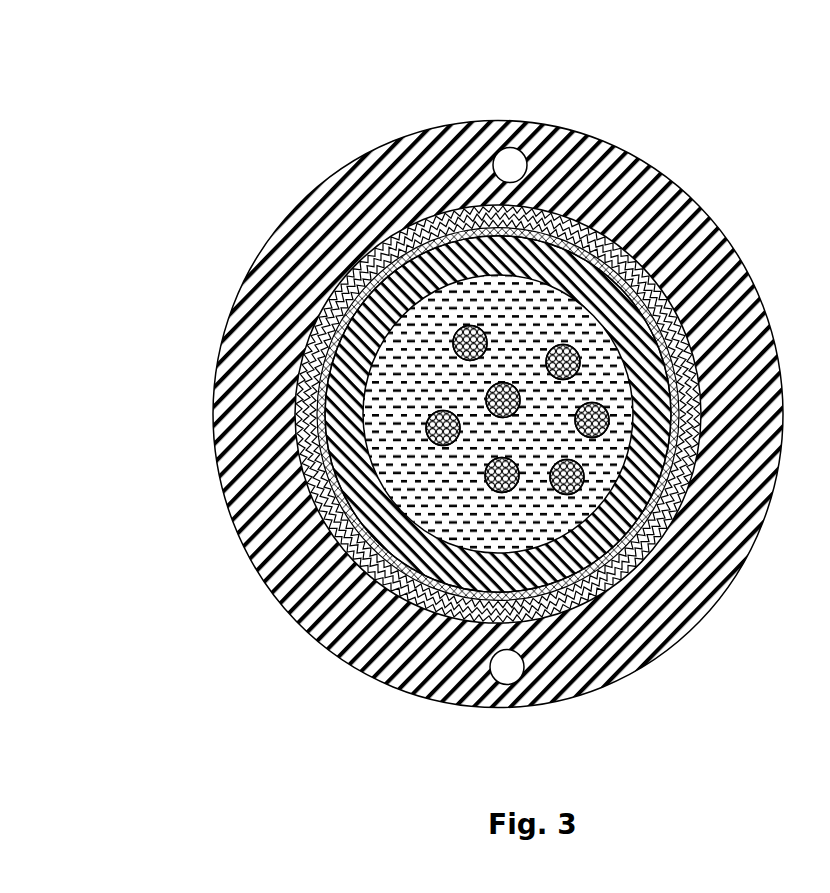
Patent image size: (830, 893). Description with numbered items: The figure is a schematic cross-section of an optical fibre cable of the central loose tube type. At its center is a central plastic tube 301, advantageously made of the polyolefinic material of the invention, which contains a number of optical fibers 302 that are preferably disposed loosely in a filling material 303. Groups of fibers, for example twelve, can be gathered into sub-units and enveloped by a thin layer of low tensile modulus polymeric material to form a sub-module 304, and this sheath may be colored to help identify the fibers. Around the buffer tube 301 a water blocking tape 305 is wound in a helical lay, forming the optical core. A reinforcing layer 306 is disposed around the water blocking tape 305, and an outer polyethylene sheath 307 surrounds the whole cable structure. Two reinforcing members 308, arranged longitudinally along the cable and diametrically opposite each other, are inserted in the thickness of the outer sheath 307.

The central plastic tube 301 is at (347, 440).
The optical fibers 302 is at (430, 436).
The filling material 303 is at (470, 525).
The sub-module 304 is at (453, 337).
The water blocking tape 305 is at (430, 222).
The reinforcing layer 306 is at (317, 323).
The outer polyethylene sheath 307 is at (617, 175).
The reinforcing members 308 is at (510, 163).